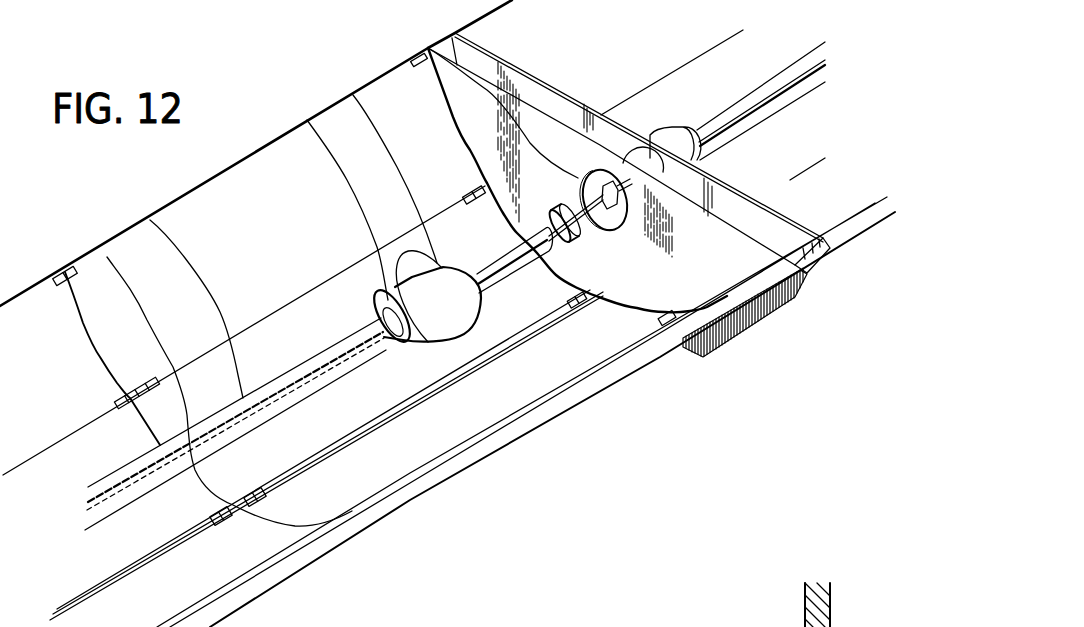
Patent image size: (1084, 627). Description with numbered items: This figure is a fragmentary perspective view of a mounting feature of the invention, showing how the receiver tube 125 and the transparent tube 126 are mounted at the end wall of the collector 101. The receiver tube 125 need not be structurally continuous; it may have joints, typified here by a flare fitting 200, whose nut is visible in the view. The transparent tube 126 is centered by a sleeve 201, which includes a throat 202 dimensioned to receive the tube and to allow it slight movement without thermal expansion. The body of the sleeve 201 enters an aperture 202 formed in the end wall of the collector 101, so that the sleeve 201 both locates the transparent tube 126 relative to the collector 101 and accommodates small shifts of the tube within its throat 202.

The collector 101 is at (250, 150).
The receiver tube 125 is at (107, 257).
The transparent tube 126 is at (150, 218).
The flare fitting 200 is at (408, 65).
The sleeve 201 is at (353, 95).
The throat 202 is at (316, 121).